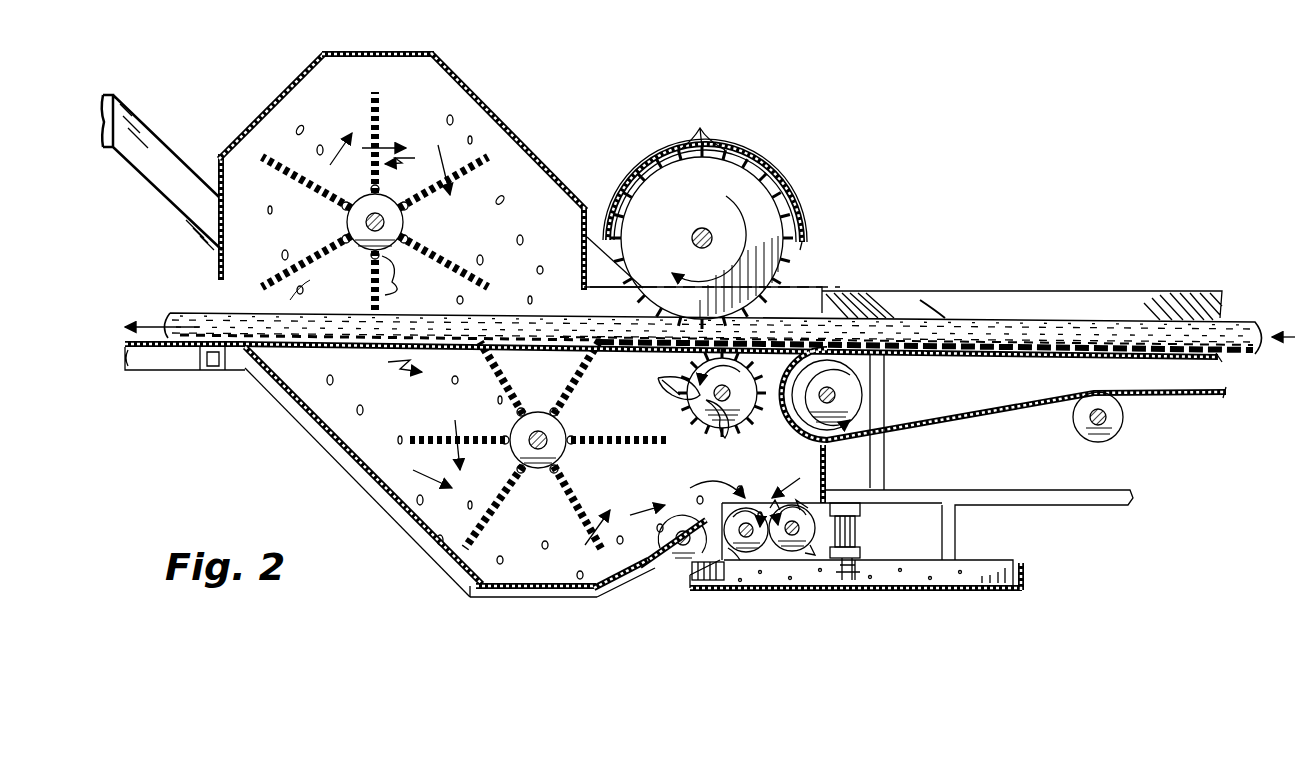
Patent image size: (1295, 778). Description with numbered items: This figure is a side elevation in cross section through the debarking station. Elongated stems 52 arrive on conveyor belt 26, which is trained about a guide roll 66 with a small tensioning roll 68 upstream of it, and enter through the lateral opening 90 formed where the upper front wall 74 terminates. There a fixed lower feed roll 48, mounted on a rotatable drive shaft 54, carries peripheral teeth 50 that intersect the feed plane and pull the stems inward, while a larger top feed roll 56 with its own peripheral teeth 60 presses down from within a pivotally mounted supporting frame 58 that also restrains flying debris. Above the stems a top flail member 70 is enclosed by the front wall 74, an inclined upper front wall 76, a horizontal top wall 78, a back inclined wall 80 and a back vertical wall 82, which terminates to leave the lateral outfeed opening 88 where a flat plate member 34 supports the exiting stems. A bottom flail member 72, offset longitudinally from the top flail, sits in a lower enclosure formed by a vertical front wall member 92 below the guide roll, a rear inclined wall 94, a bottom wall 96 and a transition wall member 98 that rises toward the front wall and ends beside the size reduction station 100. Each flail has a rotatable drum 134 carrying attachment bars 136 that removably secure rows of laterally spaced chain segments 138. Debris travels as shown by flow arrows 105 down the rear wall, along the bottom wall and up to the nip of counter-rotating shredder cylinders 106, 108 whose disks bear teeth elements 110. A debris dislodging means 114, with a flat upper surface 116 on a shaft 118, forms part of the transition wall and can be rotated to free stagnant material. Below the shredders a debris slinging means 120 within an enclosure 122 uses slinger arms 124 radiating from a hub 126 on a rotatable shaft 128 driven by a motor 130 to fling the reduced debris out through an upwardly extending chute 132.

The conveyor belt 26 is at (935, 360).
The flat plate member 34 is at (160, 356).
The lower feed roll 48 is at (736, 410).
The peripheral teeth 50 is at (662, 382).
The elongated stems 52 is at (1004, 316).
The rotatable drive shaft 54 is at (725, 426).
The top feed roll 56 is at (790, 254).
The supporting frame 58 is at (778, 165).
The peripheral teeth 60 is at (712, 138).
The guide roll 66 is at (856, 392).
The tensioning roll 68 is at (1122, 426).
The top flail member 70 is at (412, 147).
The bottom flail member 72 is at (391, 360).
The upper front wall 74 is at (589, 222).
The inclined upper front wall 76 is at (488, 104).
The top wall 78 is at (402, 54).
The back inclined wall 80 is at (283, 113).
The back vertical wall 82 is at (216, 172).
The lateral outfeed opening 88 is at (226, 298).
The lateral opening 90 is at (589, 302).
The vertical front wall member 92 is at (830, 470).
The rear inclined wall 94 is at (330, 456).
The bottom wall 96 is at (523, 600).
The transition wall member 98 is at (611, 591).
The size reduction station 100 is at (777, 493).
The flow arrows 105 is at (258, 246).
The shredder cylinder 106 is at (770, 568).
The shredder cylinder 108 is at (830, 566).
The teeth elements 110 is at (744, 552).
The debris dislodging means 114 is at (668, 562).
The flat upper surface 116 is at (690, 566).
The shaft 118 is at (652, 562).
The debris slinging means 120 is at (892, 610).
The enclosure 122 is at (976, 591).
The slinger arms 124 is at (1013, 565).
The hub 126 is at (852, 572).
The rotatable shaft 128 is at (866, 565).
The motor 130 is at (854, 532).
The upwardly extending chute 132 is at (186, 210).
The rotatable drum 134 is at (347, 222).
The attachment bars 136 is at (386, 264).
The chain segments 138 is at (372, 98).